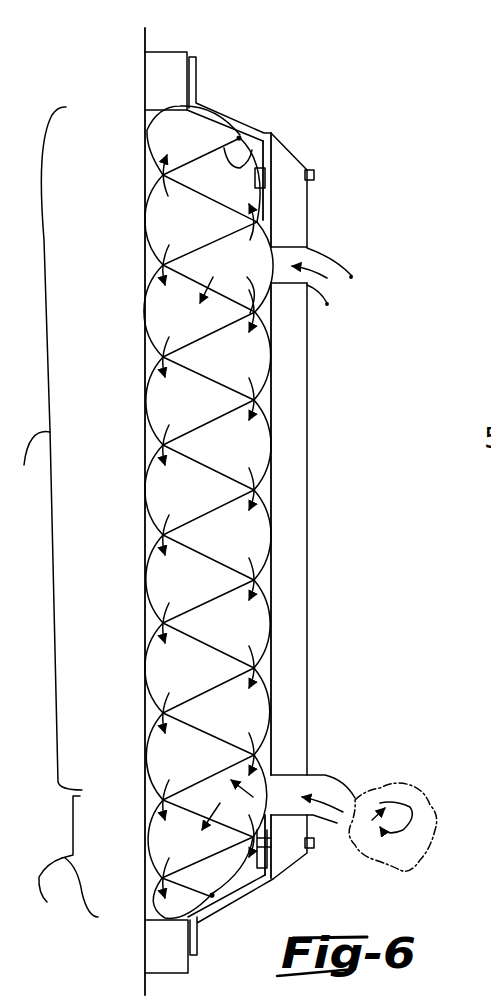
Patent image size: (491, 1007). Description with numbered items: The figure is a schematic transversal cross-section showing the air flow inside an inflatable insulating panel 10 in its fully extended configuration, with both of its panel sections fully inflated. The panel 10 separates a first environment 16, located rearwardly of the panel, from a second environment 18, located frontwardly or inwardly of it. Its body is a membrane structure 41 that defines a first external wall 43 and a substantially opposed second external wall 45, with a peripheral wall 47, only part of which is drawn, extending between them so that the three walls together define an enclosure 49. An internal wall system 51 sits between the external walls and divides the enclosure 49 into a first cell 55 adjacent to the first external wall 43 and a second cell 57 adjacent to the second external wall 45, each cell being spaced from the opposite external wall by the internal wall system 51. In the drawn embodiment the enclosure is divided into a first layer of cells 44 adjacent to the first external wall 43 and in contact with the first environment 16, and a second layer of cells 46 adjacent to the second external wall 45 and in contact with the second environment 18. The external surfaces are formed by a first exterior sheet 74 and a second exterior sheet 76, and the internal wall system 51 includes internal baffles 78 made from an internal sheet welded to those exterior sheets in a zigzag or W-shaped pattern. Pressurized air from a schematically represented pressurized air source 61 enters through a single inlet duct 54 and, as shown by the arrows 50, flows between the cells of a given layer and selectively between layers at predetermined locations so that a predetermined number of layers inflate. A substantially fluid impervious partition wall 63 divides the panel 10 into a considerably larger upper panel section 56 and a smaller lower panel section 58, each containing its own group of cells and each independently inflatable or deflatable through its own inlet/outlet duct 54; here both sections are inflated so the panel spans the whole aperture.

The insulating panel 10 is at (147, 767).
The first environment 16 is at (112, 463).
The second environment 18 is at (368, 495).
The membrane structure 41 is at (148, 582).
The first external wall 43 is at (147, 364).
The first layer cells 44 is at (163, 267).
The second external wall 45 is at (260, 312).
The second layer cells 46 is at (252, 330).
The peripheral wall 47 is at (197, 114).
The enclosure 49 is at (230, 172).
The arrows 50 is at (262, 510).
The internal wall system 51 is at (262, 380).
The inlet duct 54 is at (347, 307).
The first cell 55 is at (160, 285).
The upper panel section 56 is at (48, 448).
The second cell 57 is at (260, 345).
The lower panel section 58 is at (68, 866).
The pressurized air source 61 is at (408, 790).
The partition wall 63 is at (243, 748).
The first exterior sheet 74 is at (158, 632).
The second exterior sheet 76 is at (262, 612).
The internal baffles 78 is at (210, 398).